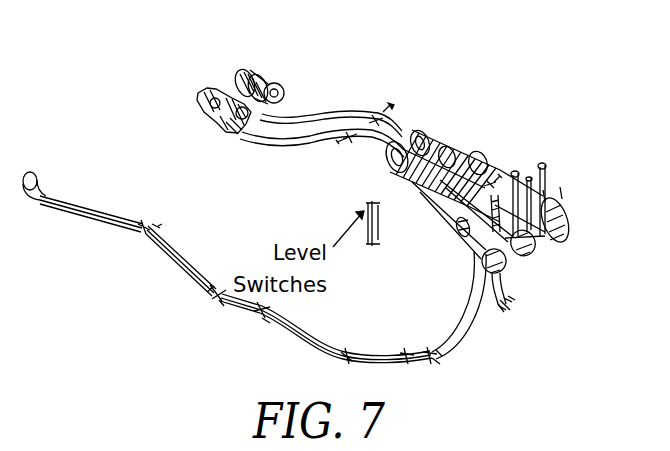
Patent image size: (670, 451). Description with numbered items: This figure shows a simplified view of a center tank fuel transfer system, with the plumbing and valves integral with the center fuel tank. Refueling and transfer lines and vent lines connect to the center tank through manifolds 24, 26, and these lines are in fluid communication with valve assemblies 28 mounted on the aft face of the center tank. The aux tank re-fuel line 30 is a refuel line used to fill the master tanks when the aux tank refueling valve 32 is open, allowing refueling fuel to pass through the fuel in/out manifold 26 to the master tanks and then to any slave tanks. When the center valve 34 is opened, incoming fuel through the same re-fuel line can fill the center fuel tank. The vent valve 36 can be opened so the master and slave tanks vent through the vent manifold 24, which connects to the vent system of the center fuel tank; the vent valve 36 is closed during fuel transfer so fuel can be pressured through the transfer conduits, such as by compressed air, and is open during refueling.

The vent manifold 24 is at (281, 78).
The fuel in/out manifold 26 is at (208, 97).
The valve assemblies 28 is at (505, 194).
The aux tank re-fuel line 30 is at (104, 218).
The aux tank refueling valve 32 is at (512, 302).
The center valve 34 is at (533, 258).
The vent valve 36 is at (568, 221).